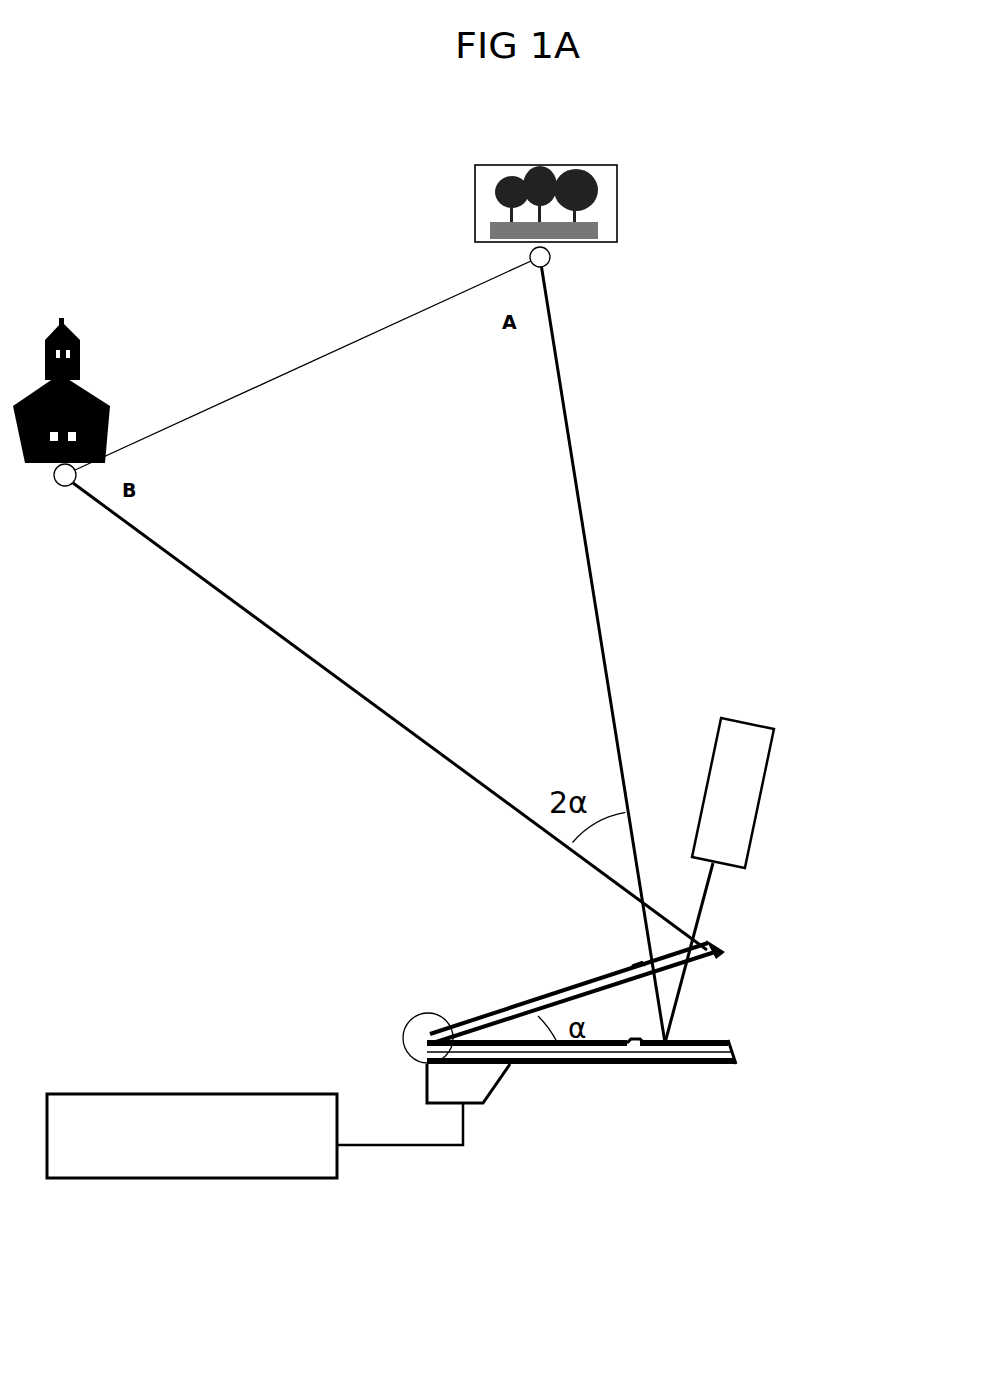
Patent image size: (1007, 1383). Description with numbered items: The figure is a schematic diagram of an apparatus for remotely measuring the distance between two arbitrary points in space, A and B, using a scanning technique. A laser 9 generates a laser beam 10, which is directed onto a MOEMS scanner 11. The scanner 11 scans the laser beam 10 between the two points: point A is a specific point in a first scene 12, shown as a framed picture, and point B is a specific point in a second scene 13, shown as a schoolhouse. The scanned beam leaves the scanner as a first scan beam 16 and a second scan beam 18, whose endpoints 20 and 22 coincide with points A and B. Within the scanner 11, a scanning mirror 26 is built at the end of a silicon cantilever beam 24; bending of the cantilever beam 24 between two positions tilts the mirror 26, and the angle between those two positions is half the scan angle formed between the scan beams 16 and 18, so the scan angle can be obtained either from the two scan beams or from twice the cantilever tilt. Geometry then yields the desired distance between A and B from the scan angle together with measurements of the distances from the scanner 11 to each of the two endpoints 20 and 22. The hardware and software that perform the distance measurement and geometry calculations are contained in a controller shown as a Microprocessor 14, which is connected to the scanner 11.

The laser 9 is at (722, 718).
The laser beam 10 is at (712, 890).
The MOEMS scanner 11 is at (460, 1019).
The first scene 12 is at (605, 248).
The second scene 13 is at (87, 355).
The Microprocessor 14 is at (190, 1103).
The first scan beam 16 is at (580, 548).
The second scan beam 18 is at (227, 600).
The endpoint 20 is at (558, 275).
The endpoint 22 is at (44, 490).
The silicon cantilever beam 24 is at (590, 1065).
The scanning mirror 26 is at (663, 945).